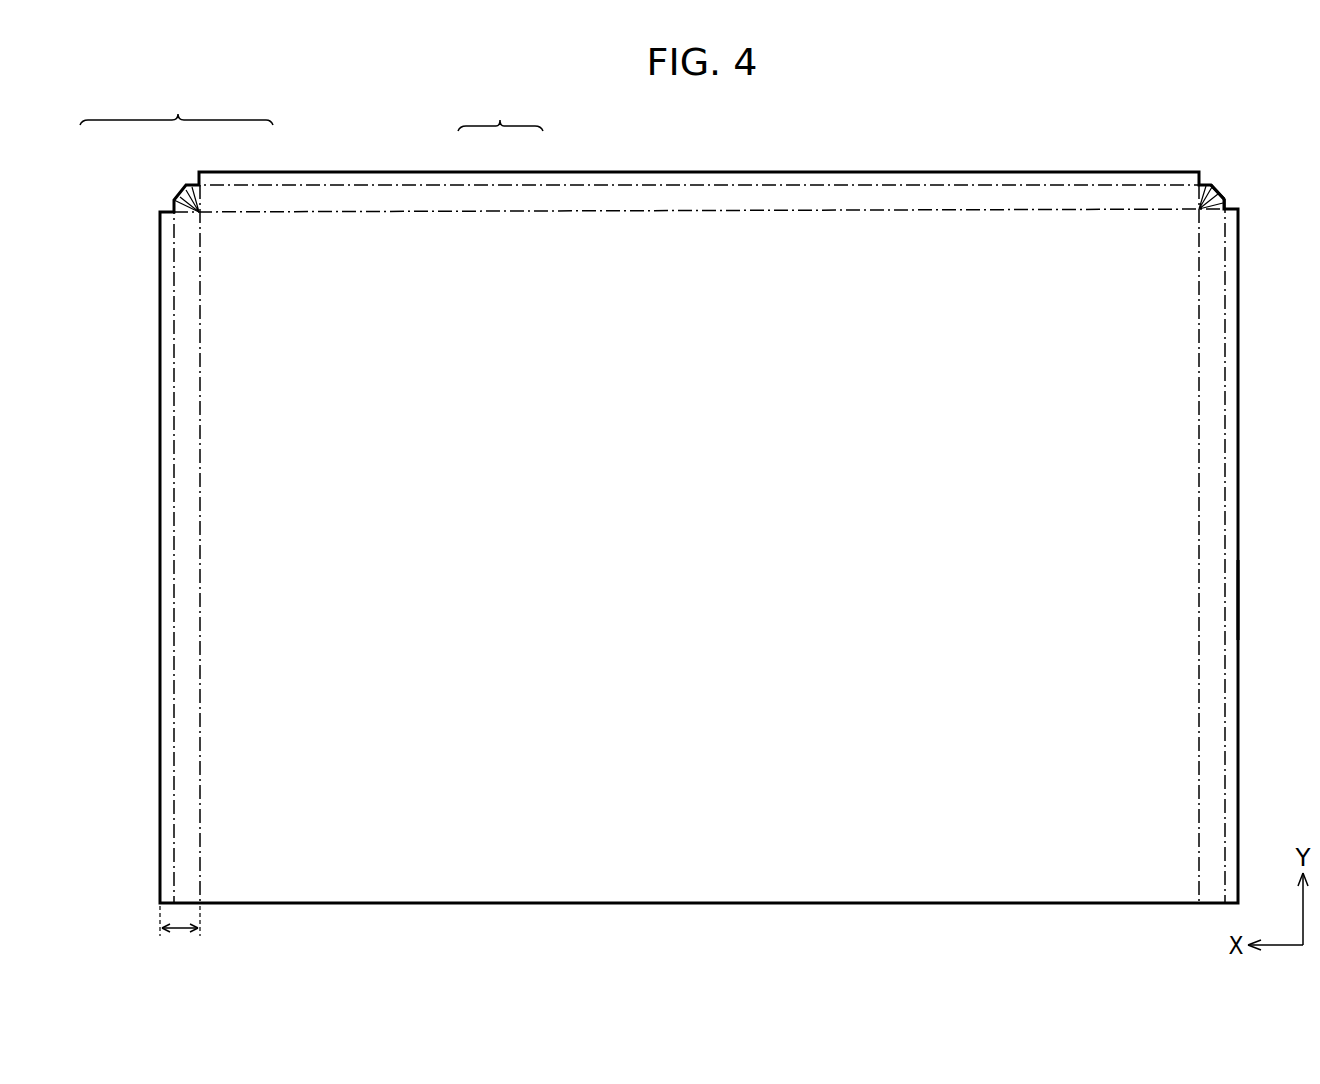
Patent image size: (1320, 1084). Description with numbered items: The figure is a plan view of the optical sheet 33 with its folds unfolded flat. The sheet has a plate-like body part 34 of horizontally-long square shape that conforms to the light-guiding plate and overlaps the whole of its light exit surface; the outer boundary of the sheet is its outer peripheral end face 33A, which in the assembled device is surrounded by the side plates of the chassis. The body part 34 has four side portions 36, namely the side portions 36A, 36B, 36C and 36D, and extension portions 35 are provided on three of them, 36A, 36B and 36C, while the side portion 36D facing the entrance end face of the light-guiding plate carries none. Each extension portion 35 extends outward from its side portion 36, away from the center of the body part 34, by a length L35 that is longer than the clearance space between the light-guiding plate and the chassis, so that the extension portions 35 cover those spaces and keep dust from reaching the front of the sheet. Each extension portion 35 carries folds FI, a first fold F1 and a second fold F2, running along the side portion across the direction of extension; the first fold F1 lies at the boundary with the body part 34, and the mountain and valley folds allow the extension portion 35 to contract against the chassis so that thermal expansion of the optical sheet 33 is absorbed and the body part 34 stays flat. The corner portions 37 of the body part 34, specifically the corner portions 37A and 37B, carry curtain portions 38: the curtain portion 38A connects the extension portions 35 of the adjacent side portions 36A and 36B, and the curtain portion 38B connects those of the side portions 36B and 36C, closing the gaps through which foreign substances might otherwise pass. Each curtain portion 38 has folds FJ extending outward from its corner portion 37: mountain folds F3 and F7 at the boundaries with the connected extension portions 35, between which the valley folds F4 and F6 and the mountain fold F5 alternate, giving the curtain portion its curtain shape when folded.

The optical sheet 33 is at (689, 131).
The outer peripheral end face 33A is at (1239, 593).
The body part 34 is at (917, 250).
The extension portion 35 is at (1015, 198).
The side portion 36 is at (1199, 539).
The side portion 36A is at (200, 282).
The side portion 36B is at (768, 210).
The side portion 36C is at (1199, 442).
The side portion 36D is at (714, 904).
The corner portion 37 is at (1199, 210).
The corner portion 37A is at (201, 214).
The corner portion 37B is at (1199, 209).
The curtain portion 38 is at (1200, 207).
The curtain portion 38A is at (190, 215).
The curtain portion 38B is at (1225, 199).
The first fold F1 is at (503, 211).
The second fold F2 is at (466, 185).
The fold F3 is at (200, 211).
The fold F4 is at (199, 211).
The fold F5 is at (198, 211).
The fold F6 is at (195, 211).
The fold F7 is at (193, 211).
The folds FI is at (500, 110).
The folds FJ is at (176, 105).
The length of extension portion L35 is at (180, 935).